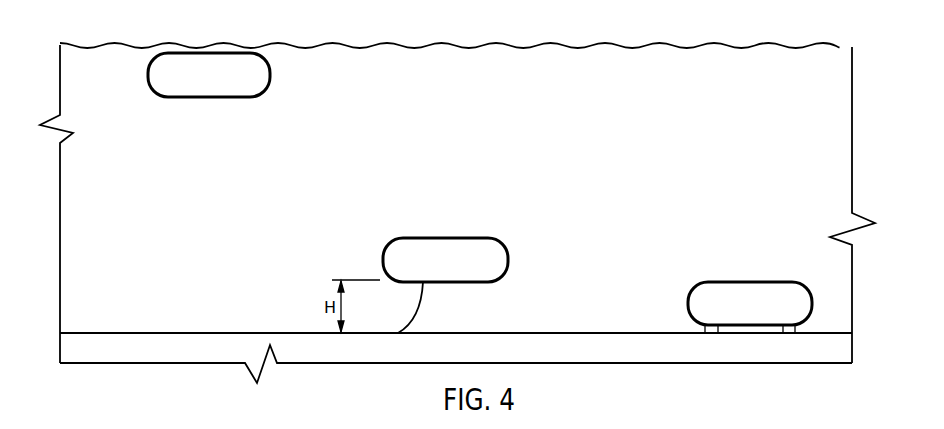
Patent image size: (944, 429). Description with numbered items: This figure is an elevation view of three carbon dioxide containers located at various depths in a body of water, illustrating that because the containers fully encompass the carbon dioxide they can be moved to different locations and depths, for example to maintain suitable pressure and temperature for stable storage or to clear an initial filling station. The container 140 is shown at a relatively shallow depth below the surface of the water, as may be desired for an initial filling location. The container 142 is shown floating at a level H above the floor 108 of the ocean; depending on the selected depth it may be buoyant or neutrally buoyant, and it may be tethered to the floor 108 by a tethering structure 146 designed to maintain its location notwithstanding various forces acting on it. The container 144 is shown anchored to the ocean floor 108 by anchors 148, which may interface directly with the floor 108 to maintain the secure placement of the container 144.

The floor 108 is at (155, 342).
The container 140 is at (252, 97).
The container 142 is at (393, 238).
The container 144 is at (698, 282).
The tethering structure 146 is at (420, 305).
The anchor 148 is at (705, 330).